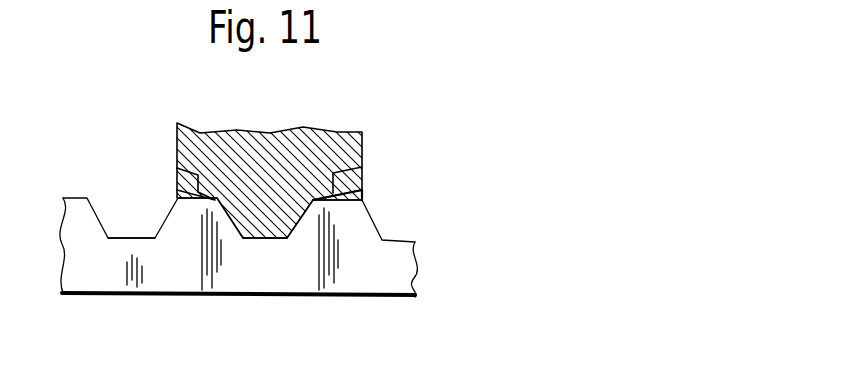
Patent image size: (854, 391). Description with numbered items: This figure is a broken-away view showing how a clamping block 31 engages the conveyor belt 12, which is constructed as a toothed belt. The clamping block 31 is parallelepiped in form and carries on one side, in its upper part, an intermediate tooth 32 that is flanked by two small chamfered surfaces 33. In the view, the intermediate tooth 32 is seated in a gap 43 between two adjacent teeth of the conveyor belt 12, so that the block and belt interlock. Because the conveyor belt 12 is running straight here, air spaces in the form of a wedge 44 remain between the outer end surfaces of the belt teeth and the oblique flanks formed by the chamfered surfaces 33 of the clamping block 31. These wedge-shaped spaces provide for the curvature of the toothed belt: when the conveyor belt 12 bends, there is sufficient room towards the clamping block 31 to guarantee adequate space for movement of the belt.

The conveyor belt 12 is at (380, 273).
The clamping block 31 is at (233, 130).
The intermediate tooth 32 is at (255, 235).
The chamfered surfaces 33 is at (177, 168).
The gap 43 is at (125, 238).
The wedge 44 is at (362, 195).